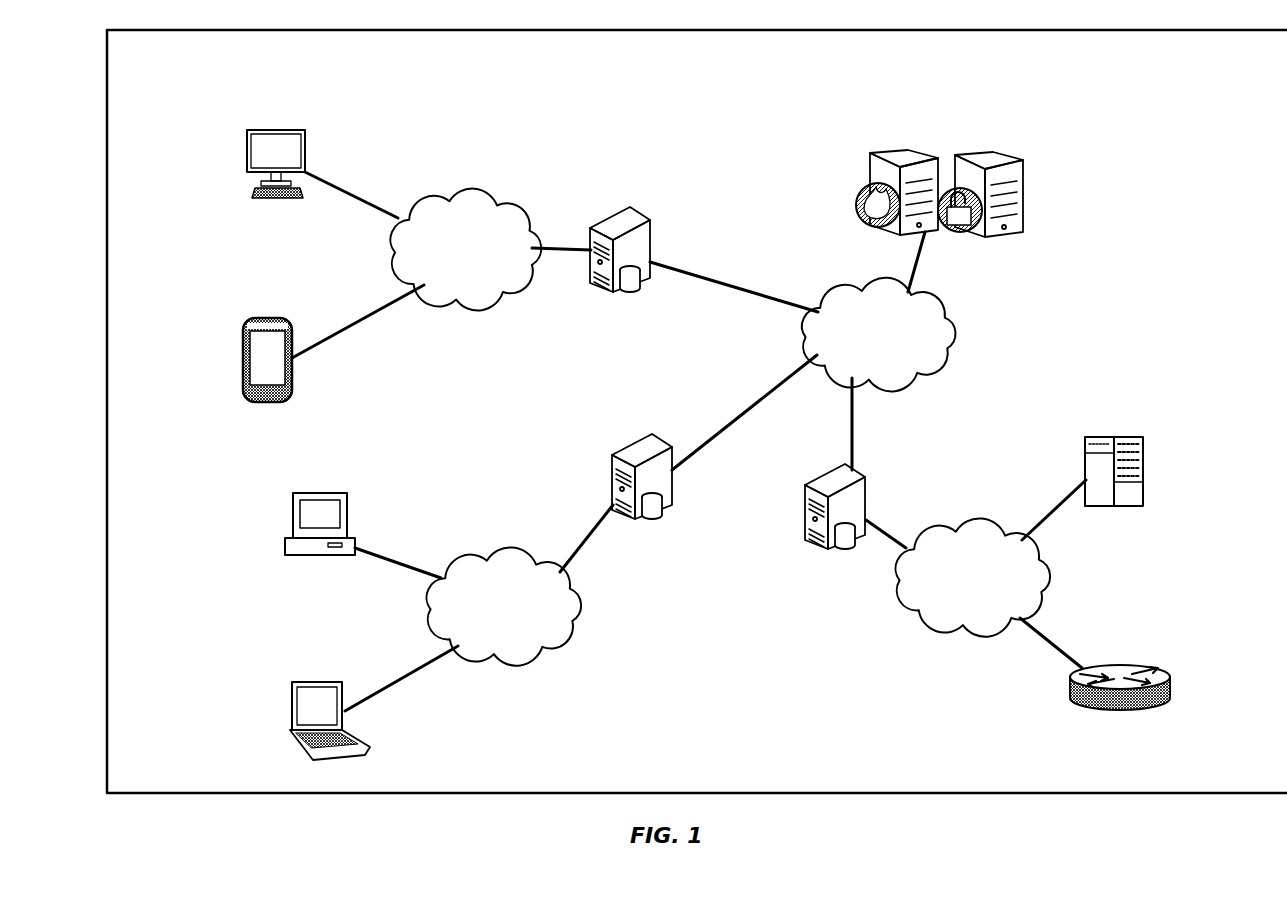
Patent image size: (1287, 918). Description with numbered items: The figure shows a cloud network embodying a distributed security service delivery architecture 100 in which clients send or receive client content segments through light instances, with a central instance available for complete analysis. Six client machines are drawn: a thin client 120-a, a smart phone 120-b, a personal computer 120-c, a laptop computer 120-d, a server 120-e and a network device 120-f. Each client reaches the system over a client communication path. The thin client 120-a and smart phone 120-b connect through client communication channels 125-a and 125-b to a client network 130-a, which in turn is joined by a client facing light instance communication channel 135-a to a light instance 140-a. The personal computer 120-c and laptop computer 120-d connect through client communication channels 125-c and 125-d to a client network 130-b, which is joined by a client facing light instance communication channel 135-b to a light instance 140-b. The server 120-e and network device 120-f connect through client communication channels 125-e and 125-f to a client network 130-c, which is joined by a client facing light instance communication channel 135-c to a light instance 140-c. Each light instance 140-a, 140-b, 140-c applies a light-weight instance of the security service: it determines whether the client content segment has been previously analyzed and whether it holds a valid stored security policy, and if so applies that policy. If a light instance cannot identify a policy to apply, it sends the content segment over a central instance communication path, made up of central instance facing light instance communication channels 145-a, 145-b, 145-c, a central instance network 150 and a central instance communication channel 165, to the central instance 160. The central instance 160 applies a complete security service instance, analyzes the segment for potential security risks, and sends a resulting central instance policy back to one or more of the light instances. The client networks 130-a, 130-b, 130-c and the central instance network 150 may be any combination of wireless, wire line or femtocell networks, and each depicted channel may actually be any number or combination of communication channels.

The distributed security service delivery architecture 100 is at (1282, 82).
The client 120-a is at (246, 156).
The client 120-b is at (243, 355).
The client 120-c is at (292, 510).
The client 120-d is at (290, 707).
The client 120-e is at (1145, 472).
The client 120-f is at (1170, 690).
The client communication channel 125-a is at (450, 170).
The client communication channel 125-b is at (452, 350).
The client communication channel 125-c is at (393, 560).
The client communication channel 125-d is at (497, 705).
The client communication channel 125-e is at (1150, 540).
The client communication channel 125-f is at (1044, 646).
The client network 130-a is at (497, 273).
The client network 130-b is at (469, 631).
The client network 130-c is at (939, 605).
The client facing light instance communication channel 135-a is at (597, 197).
The client facing light instance communication channel 135-b is at (586, 546).
The client facing light instance communication channel 135-c is at (995, 510).
The light instance 140-a is at (631, 214).
The light instance 140-b is at (631, 442).
The light instance 140-c is at (813, 547).
The central instance facing light instance communication channel 145-a is at (767, 235).
The central instance facing light instance communication channel 145-b is at (748, 407).
The central instance facing light instance communication channel 145-c is at (955, 433).
The central instance network 150 is at (856, 362).
The central instance 160 is at (945, 157).
The central instance communication channel 165 is at (990, 287).